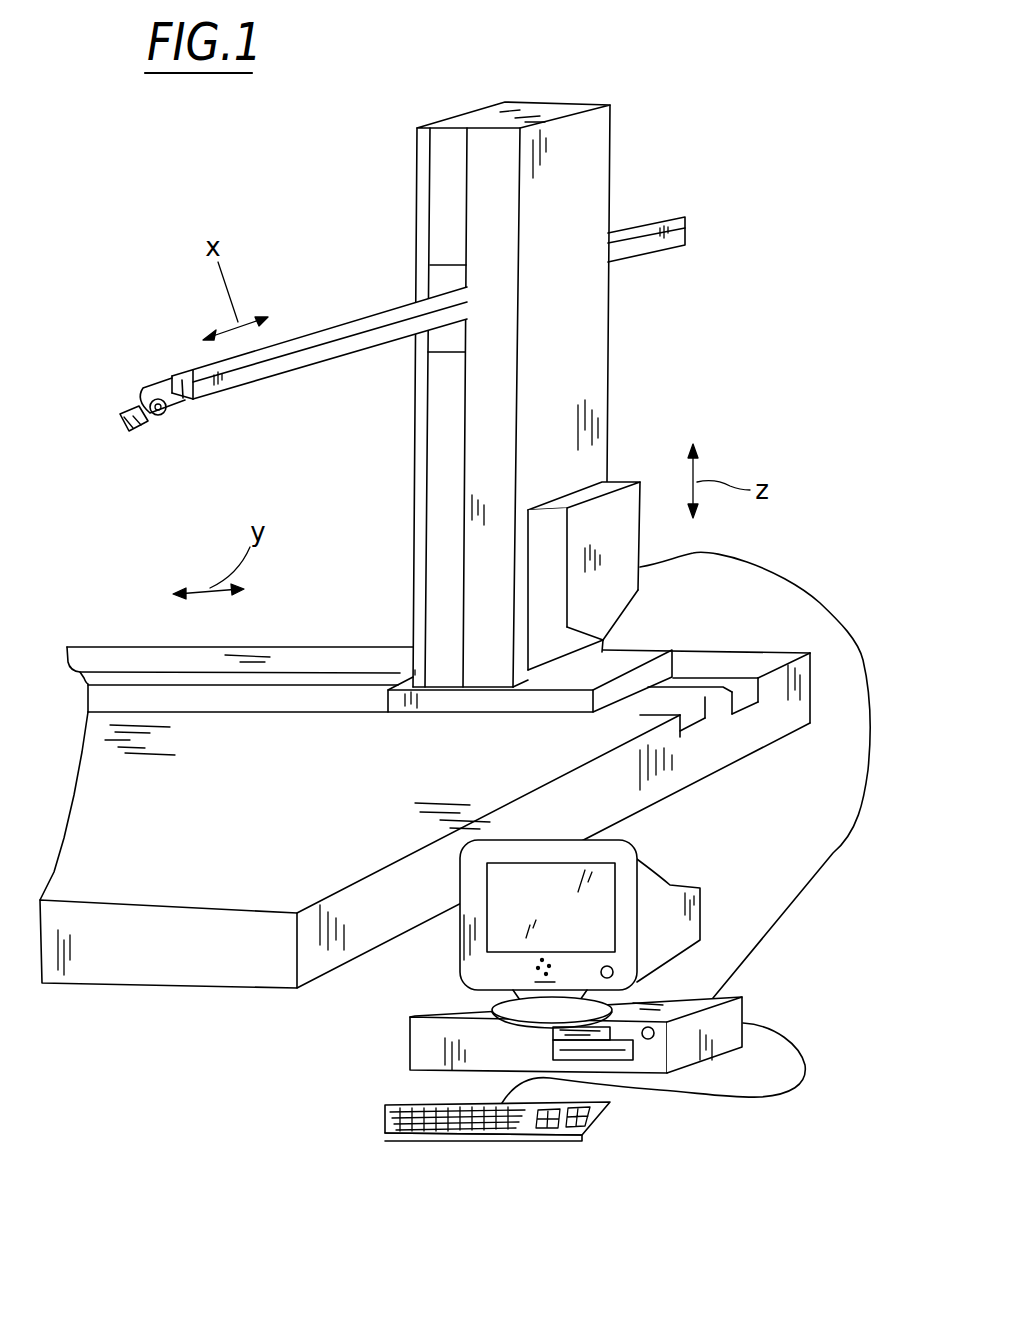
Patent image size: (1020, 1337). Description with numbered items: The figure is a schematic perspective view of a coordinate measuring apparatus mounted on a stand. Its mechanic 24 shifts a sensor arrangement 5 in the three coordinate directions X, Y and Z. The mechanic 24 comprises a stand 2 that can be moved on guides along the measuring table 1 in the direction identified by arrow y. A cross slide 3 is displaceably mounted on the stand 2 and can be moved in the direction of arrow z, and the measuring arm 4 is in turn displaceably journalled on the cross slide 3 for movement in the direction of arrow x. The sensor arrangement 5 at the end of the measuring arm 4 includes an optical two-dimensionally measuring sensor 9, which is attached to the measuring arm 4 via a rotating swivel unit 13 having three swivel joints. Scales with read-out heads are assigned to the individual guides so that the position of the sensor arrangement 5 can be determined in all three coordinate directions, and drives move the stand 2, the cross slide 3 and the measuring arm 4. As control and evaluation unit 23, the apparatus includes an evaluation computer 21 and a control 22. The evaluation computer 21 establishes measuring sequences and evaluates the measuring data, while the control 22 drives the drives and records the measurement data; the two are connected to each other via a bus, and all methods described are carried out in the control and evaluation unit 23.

The measuring table 1 is at (712, 752).
The stand 2 is at (594, 308).
The cross slide 3 is at (437, 278).
The measuring arm 4 is at (355, 340).
The sensor arrangement 5 is at (188, 415).
The optical two-dimensionally measuring sensor 9 is at (138, 430).
The rotating swivel unit 13 is at (160, 384).
The evaluation computer 21 is at (405, 1053).
The control 22 is at (632, 505).
The control and evaluation unit 23 is at (722, 933).
The mechanic 24 is at (641, 207).